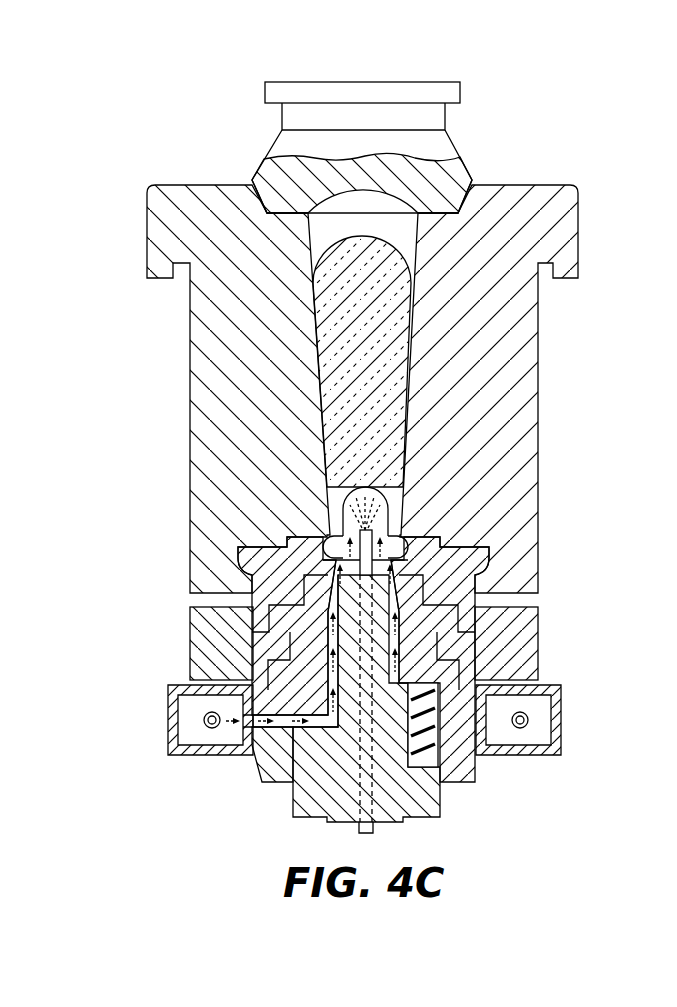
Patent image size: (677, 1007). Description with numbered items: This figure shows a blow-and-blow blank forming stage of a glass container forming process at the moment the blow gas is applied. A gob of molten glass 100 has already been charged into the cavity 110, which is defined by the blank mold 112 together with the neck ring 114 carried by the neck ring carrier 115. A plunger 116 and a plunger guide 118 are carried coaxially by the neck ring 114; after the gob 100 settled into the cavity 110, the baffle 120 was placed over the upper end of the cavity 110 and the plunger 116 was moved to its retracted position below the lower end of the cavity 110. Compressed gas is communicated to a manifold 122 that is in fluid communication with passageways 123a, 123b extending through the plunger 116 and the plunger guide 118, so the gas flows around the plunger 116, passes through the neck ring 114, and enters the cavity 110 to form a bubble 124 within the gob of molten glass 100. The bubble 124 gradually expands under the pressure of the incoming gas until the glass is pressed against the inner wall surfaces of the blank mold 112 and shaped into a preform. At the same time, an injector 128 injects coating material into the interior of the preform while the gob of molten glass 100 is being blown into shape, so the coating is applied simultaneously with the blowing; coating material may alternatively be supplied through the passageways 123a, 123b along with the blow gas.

The gob of molten glass 100 is at (315, 365).
The cavity 110 is at (408, 220).
The blank mold 112 is at (539, 343).
The neck ring 114 is at (478, 585).
The neck ring carrier 115 is at (539, 632).
The plunger 116 is at (422, 817).
The plunger guide 118 is at (262, 775).
The baffle 120 is at (462, 88).
The manifold 122 is at (168, 714).
The passageway 123a is at (307, 730).
The passageway 123b is at (260, 732).
The bubble 124 is at (367, 492).
The injector 128 is at (372, 521).